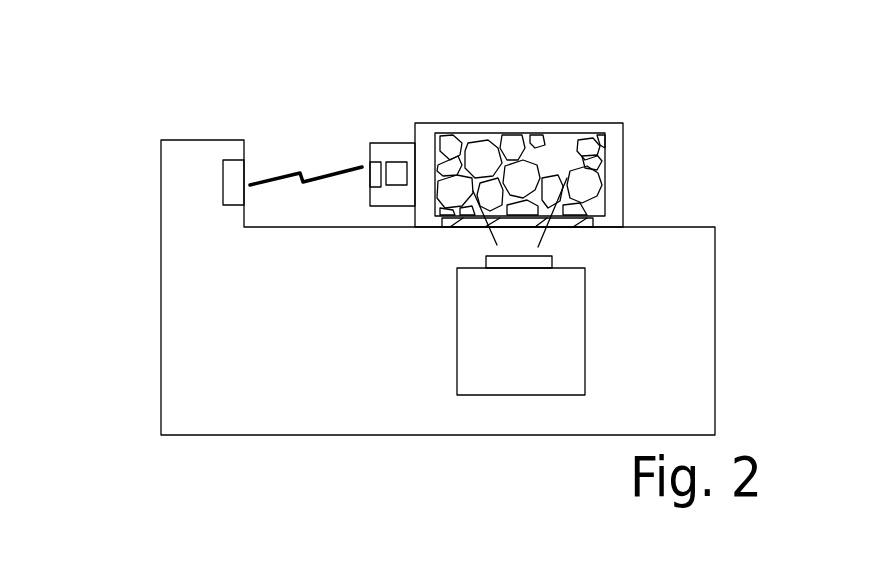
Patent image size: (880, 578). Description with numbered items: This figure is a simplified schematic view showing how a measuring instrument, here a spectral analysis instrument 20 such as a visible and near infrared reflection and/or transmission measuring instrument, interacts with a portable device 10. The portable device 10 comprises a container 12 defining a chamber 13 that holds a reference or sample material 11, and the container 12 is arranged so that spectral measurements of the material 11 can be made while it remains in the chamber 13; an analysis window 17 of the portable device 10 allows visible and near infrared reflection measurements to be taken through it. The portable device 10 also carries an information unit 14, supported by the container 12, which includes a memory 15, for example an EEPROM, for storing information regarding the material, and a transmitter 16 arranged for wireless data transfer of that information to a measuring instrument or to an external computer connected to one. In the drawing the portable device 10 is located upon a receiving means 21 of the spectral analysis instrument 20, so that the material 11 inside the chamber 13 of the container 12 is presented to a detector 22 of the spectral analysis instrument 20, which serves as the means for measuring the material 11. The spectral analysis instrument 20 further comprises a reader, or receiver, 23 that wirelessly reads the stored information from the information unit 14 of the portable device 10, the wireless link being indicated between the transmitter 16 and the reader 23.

The portable device 10 is at (590, 132).
The reference or sample material 11 is at (520, 126).
The container 12 is at (519, 132).
The chamber 13 is at (570, 163).
The information unit 14 is at (370, 120).
The memory 15 is at (399, 113).
The transmitter 16 is at (310, 136).
The analysis window 17 is at (406, 264).
The spectral analysis instrument 20 is at (441, 236).
The receiving means 21 is at (473, 275).
The detector 22 is at (626, 286).
The reader 23 is at (223, 121).